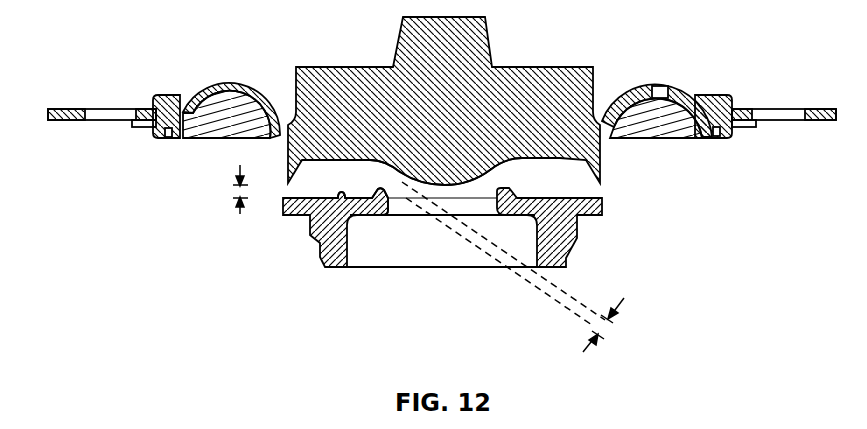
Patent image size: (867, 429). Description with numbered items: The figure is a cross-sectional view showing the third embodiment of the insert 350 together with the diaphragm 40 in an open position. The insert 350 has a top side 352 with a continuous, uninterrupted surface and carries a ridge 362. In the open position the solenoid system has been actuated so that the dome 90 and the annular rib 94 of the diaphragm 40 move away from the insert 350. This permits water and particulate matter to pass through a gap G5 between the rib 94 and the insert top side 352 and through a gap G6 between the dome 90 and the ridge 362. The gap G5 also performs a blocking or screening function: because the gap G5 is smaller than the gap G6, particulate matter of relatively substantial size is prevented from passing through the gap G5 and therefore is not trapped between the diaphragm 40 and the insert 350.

The diaphragm 40 is at (537, 66).
The annular rib 94 is at (601, 181).
The dome 90 is at (462, 187).
The insert 350 is at (566, 262).
The top side 352 is at (343, 198).
The ridge 362 is at (393, 198).
The gap G5 is at (230, 190).
The gap G6 is at (606, 327).